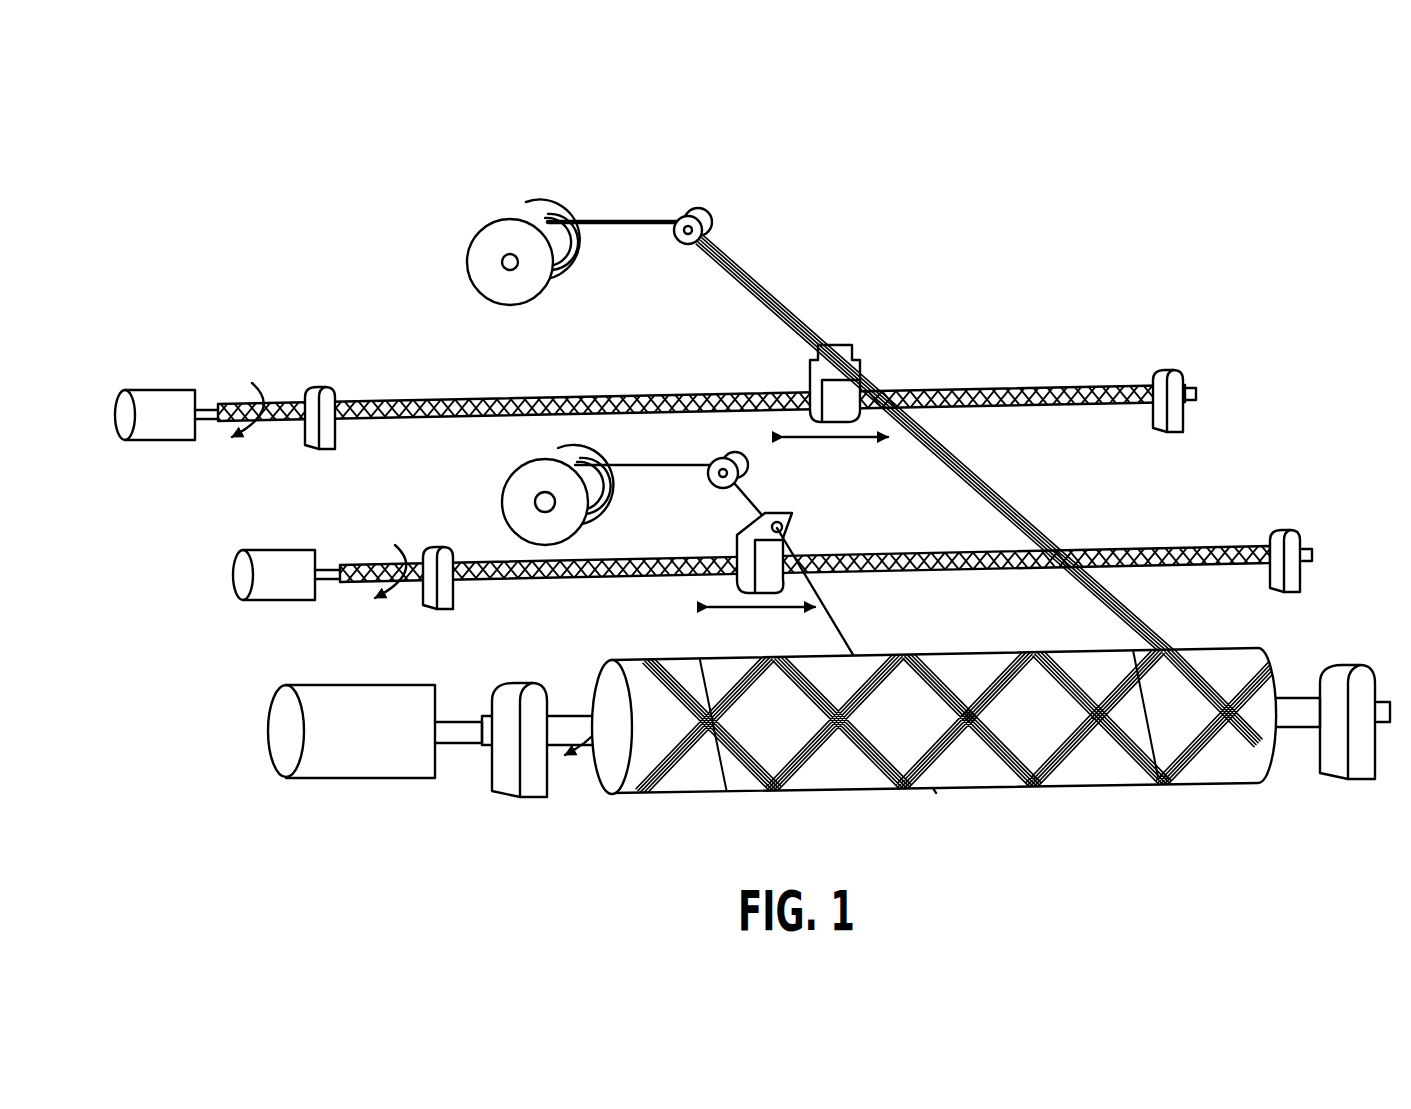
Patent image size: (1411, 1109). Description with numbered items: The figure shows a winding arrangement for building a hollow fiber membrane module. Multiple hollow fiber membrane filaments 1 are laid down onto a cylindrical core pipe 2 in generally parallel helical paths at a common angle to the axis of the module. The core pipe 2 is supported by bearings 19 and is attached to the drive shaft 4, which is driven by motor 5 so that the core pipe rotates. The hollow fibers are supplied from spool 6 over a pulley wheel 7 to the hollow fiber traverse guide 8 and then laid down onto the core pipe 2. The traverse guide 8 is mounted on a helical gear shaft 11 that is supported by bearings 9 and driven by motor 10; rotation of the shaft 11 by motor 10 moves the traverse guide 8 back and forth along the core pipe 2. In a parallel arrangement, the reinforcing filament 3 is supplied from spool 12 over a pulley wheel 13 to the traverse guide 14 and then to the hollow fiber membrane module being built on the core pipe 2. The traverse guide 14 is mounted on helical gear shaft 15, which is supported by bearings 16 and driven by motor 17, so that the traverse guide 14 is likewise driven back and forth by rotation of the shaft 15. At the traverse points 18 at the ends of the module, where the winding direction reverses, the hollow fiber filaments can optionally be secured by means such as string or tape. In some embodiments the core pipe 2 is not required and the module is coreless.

The hollow fiber membrane filaments 1 is at (1120, 598).
The cylindrical core pipe 2 is at (1290, 700).
The reinforcing filament 3 is at (832, 612).
The drive shaft 4 is at (455, 722).
The motor 5 is at (335, 695).
The spool 6 is at (530, 212).
The pulley wheel 7 is at (702, 214).
The hollow fiber traverse guide 8 is at (838, 352).
The bearings 9 is at (318, 388).
The motor 10 is at (150, 398).
The helical gear shaft 11 is at (448, 404).
The spool 12 is at (512, 478).
The pulley wheel 13 is at (712, 488).
The traverse guide 14 is at (795, 518).
The helical gear shaft 15 is at (1140, 550).
The bearings 16 is at (436, 550).
The motor 17 is at (272, 556).
The traverse points 18 is at (604, 795).
The bearings 19 is at (512, 783).